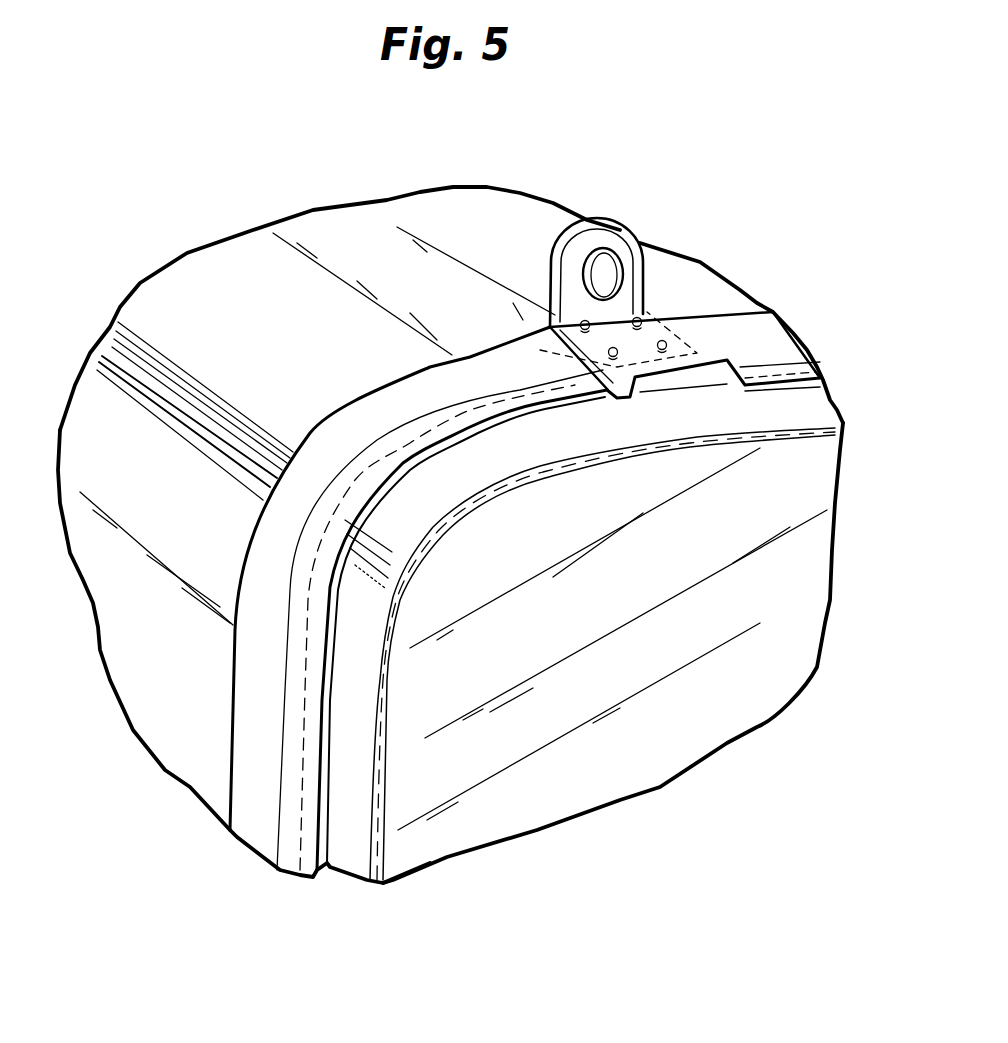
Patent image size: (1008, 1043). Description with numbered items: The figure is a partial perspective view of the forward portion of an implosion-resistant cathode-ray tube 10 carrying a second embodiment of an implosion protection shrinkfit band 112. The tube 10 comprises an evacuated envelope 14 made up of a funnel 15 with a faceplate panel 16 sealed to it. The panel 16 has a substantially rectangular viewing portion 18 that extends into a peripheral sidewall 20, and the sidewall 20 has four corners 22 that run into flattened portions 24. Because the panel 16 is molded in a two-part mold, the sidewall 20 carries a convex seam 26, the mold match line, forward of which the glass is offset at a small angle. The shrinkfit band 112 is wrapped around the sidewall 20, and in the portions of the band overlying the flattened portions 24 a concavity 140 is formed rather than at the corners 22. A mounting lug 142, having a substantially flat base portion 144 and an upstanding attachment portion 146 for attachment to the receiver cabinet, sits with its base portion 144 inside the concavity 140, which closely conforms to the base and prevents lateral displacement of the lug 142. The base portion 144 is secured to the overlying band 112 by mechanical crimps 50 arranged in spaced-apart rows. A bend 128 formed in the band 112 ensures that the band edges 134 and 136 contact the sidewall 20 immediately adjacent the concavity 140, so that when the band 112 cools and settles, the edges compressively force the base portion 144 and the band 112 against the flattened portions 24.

The cathode-ray tube 10 is at (653, 193).
The evacuated envelope 14 is at (313, 210).
The funnel 15 is at (268, 337).
The faceplate panel 16 is at (787, 550).
The viewing portion 18 is at (783, 617).
The peripheral sidewall 20 is at (800, 413).
The corners 22 is at (397, 540).
The flattened portions 24 is at (605, 435).
The convex seam 26 is at (817, 357).
The mechanical crimp 50 is at (581, 318).
The implosion protection shrinkfit band 112 is at (725, 332).
The bend 128 is at (782, 350).
The edge of the band 134 is at (805, 384).
The edge of the band 136 is at (747, 313).
The concavity 140 is at (640, 393).
The mounting lug 142 is at (651, 270).
The base portion 144 is at (590, 343).
The upstanding attachment portion 146 is at (633, 268).